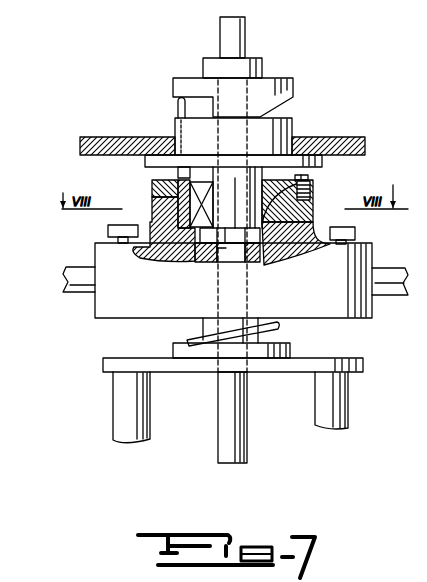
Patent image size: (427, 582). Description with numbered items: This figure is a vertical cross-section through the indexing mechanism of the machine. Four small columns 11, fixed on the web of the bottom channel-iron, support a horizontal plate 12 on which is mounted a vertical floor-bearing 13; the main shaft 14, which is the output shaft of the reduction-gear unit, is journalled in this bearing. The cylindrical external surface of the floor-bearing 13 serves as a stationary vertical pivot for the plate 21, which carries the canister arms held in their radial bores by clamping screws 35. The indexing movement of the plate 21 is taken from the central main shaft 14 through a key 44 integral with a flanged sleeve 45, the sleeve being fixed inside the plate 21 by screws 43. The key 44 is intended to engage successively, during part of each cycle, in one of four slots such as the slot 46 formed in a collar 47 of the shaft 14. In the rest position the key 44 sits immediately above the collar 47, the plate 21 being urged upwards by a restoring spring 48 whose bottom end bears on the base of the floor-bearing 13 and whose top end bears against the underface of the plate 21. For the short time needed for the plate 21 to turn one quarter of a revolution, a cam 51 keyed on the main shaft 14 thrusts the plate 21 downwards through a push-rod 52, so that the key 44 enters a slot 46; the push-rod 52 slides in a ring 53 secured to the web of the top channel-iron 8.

The top channel-iron 8 is at (333, 137).
The small columns 11 is at (143, 394).
The horizontal plate 12 is at (364, 365).
The vertical floor-bearing 13 is at (291, 350).
The main shaft 14 is at (240, 407).
The plate 21 is at (360, 319).
The clamping screws 35 is at (115, 225).
The screws 43 is at (309, 178).
The key 44 is at (190, 198).
The flanged sleeve 45 is at (306, 212).
The slot 46 is at (233, 243).
The collar 47 is at (304, 200).
The restoring spring 48 is at (268, 343).
The cam 51 is at (292, 98).
The push-rod 52 is at (178, 106).
The ring 53 is at (292, 121).